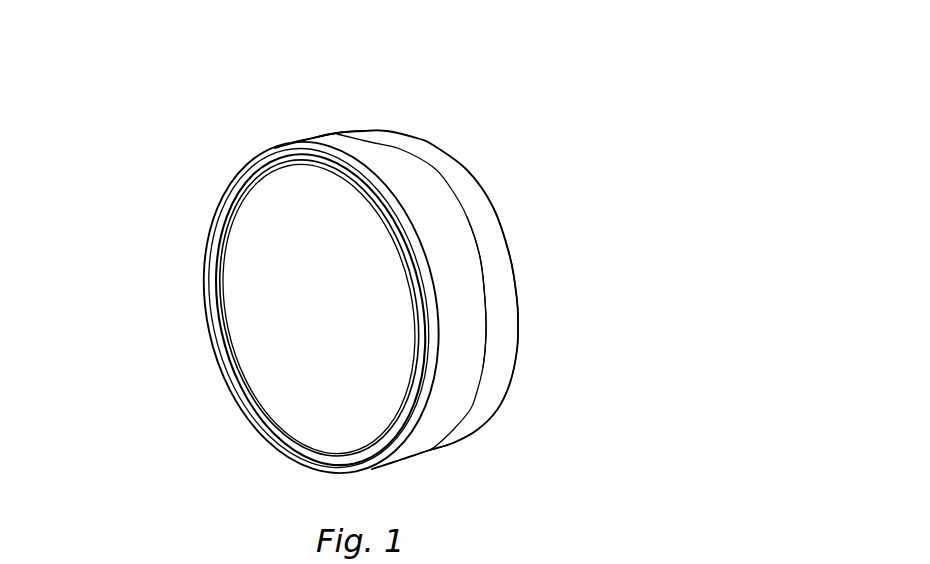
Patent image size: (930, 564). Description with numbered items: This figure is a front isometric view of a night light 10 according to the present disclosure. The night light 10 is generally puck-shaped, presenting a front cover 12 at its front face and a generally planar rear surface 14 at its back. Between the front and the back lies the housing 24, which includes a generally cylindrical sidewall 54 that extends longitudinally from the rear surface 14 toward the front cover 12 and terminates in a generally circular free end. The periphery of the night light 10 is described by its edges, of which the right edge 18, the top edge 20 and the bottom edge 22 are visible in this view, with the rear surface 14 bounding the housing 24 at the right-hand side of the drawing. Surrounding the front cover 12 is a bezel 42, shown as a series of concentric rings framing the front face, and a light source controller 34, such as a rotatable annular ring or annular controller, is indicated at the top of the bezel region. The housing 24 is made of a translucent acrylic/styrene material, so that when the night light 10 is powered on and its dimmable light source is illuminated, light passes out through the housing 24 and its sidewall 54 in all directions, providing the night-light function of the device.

The night light 10 is at (575, 127).
The front cover 12 is at (298, 341).
The rear surface 14 is at (524, 326).
The right edge 18 is at (486, 299).
The top edge 20 is at (342, 133).
The bottom edge 22 is at (438, 447).
The housing 24 is at (487, 65).
The light source controller 34 is at (314, 132).
The bezel 42 is at (223, 231).
The sidewall 54 is at (528, 62).